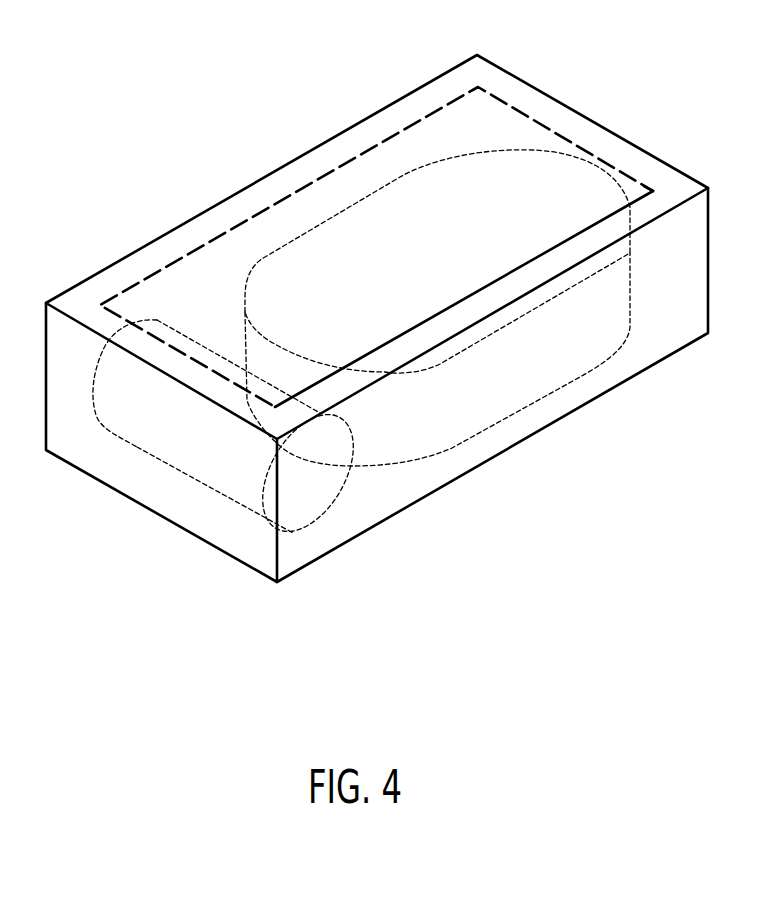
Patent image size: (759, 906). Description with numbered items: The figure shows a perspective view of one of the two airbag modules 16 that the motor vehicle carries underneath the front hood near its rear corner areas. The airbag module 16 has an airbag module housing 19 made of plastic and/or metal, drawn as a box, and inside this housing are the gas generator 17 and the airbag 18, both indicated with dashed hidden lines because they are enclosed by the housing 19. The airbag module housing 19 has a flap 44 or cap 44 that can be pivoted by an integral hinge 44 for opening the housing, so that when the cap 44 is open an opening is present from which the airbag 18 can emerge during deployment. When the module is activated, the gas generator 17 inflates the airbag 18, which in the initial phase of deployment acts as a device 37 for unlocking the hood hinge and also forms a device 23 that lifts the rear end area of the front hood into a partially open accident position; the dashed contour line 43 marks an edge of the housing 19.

The airbag module 16 is at (377, 342).
The gas generator 17 is at (147, 453).
The airbag 18 is at (496, 308).
The airbag module housing 19 is at (155, 258).
The device for lifting the front hood 23 is at (496, 308).
The device for unlocking the hinge 37 is at (590, 380).
The edge line 43 is at (513, 105).
The flap or cap 44 is at (657, 200).